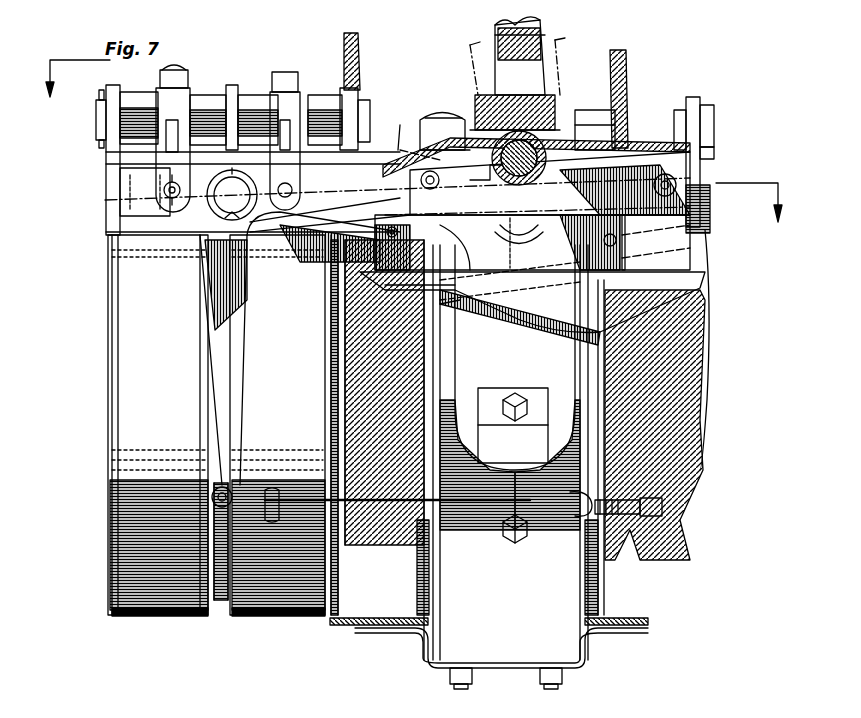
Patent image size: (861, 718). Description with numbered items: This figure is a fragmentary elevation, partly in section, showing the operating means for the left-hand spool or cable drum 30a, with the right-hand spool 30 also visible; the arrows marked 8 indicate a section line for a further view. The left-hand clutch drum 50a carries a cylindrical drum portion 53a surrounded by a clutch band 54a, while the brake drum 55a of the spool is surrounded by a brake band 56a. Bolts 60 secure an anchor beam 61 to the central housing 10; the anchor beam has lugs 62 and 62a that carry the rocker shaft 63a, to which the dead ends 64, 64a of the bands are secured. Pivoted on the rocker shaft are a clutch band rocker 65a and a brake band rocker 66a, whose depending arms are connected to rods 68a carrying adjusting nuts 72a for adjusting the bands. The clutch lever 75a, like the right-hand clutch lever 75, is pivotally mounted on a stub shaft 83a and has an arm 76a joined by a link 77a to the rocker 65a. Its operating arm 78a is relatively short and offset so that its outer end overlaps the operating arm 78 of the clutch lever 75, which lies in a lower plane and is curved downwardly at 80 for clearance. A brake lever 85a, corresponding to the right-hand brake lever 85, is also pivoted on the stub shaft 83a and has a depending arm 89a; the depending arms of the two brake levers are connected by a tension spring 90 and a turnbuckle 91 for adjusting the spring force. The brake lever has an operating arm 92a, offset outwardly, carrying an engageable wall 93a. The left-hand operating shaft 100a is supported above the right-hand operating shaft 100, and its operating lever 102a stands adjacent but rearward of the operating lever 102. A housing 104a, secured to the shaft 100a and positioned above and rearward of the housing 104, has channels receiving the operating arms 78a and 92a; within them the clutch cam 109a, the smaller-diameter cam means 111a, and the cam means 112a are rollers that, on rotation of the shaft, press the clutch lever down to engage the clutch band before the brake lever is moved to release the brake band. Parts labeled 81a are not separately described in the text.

The section line 8- 8 is at (411, 156).
The central housing 10 is at (489, 467).
The spool or cable drum 30 is at (600, 578).
The left-hand spool or cable drum 30a is at (416, 552).
The clutch drum 50a is at (108, 512).
The cylindrical drum portion 53a is at (116, 372).
The clutch band 54a is at (148, 316).
The brake drum 55a is at (224, 604).
The brake band 56a is at (290, 605).
The bolts 60 is at (432, 118).
The anchor beam 61 is at (108, 188).
The lugs 62 is at (694, 97).
The lugs 62a is at (114, 88).
The rocker shaft 63a is at (98, 128).
The dead ends 64 is at (708, 108).
The dead ends 64a is at (198, 108).
The clutch band rocker 65a is at (176, 90).
The brake band rocker 66a is at (300, 72).
The rods 68a is at (285, 72).
The adjusting nuts 72a is at (268, 100).
The clutch lever 75 is at (685, 300).
The left-hand clutch lever 75a is at (195, 215).
The arm 76a is at (125, 195).
The link 77a is at (178, 160).
The operating arm 78 is at (572, 290).
The operating arm 78a is at (392, 238).
The downward curve 80 is at (532, 308).
The bolt 81a is at (125, 178).
The stub shaft 83a is at (246, 222).
The brake lever 85 is at (696, 268).
The left-hand brake lever 85a is at (272, 258).
The depending arm 89a is at (228, 372).
The tension spring 90 is at (548, 545).
The turnbuckle 91 is at (660, 502).
The operating arm 92a is at (570, 210).
The engageable wall 93a is at (608, 232).
The operating shaft 100 is at (515, 238).
The left-hand operating shaft 100a is at (540, 135).
The operating lever 102 is at (500, 25).
The left-hand operating lever 102a is at (548, 60).
The housing 104 is at (462, 290).
The left-hand housing 104a is at (638, 140).
The clutch cam 109a is at (428, 148).
The cam means 111a is at (420, 180).
The cam means 112a is at (676, 182).